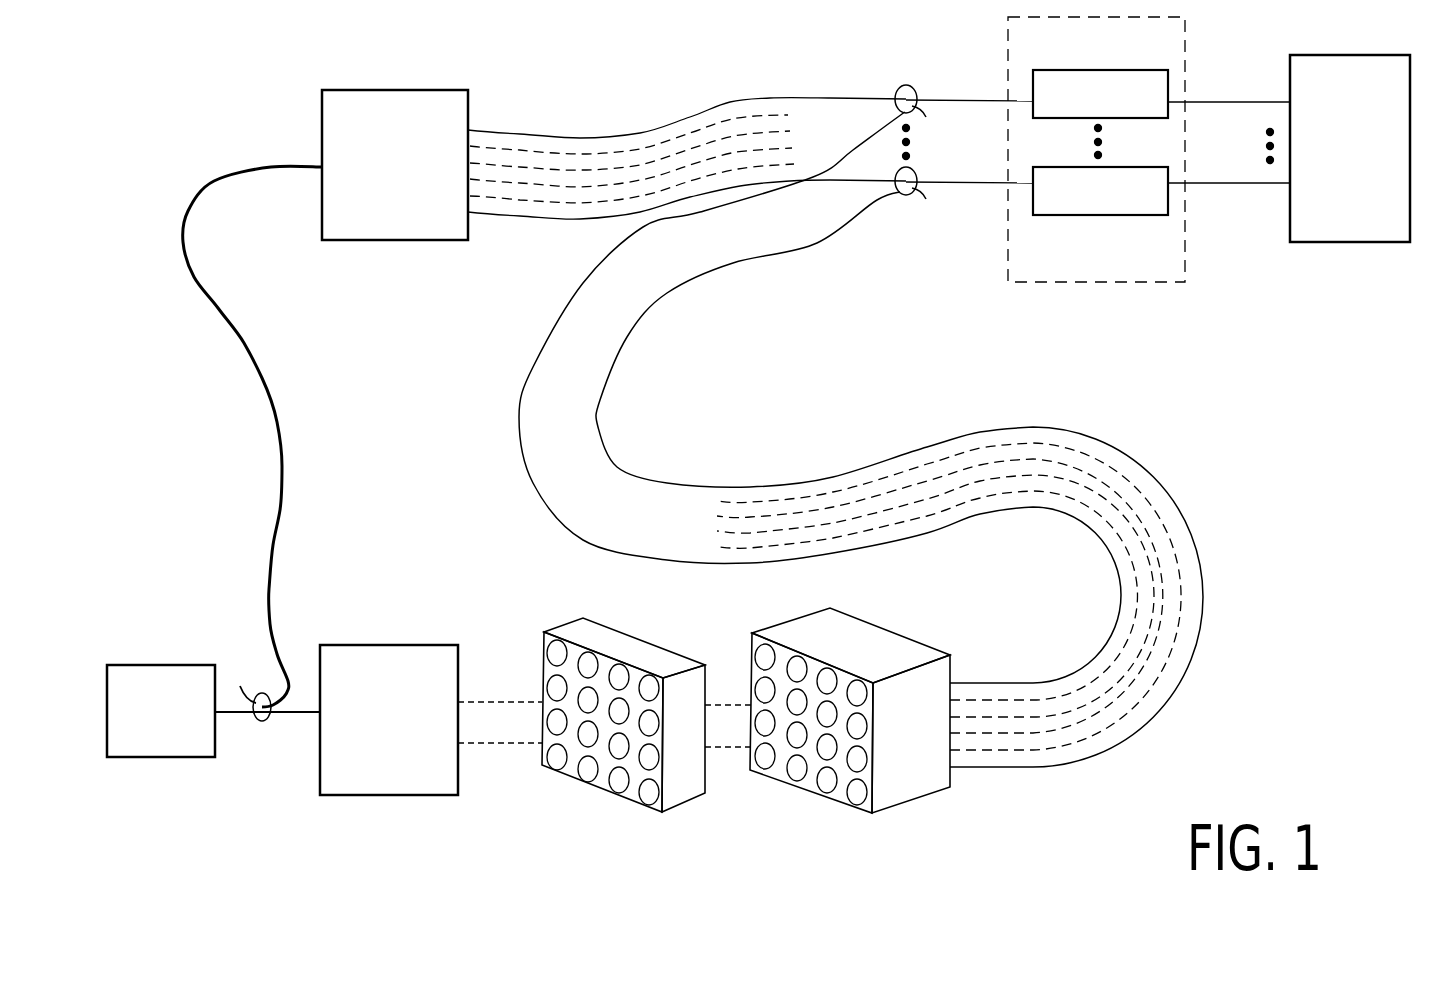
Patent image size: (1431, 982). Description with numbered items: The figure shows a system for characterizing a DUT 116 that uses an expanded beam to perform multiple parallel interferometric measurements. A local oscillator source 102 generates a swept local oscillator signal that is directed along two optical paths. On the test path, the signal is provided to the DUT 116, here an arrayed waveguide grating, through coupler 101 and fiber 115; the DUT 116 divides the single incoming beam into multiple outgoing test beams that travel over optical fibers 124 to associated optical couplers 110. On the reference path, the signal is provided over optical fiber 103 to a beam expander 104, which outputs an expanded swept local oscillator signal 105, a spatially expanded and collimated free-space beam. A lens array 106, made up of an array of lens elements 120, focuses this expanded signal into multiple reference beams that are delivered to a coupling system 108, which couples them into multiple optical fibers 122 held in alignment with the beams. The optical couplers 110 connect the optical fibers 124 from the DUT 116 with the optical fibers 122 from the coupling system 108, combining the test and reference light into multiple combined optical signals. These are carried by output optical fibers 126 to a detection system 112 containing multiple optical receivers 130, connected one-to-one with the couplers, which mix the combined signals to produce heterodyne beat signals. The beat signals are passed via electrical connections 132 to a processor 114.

The coupler 101 is at (262, 690).
The local oscillator source 102 is at (160, 757).
The optical fiber 103 is at (302, 720).
The beam expander 104 is at (370, 645).
The expanded swept local oscillator signal 105 is at (486, 698).
The lens array 106 is at (624, 756).
The coupling system 108 is at (897, 812).
The optical couplers 110 is at (902, 86).
The detection system 112 is at (1133, 282).
The processor 114 is at (1362, 243).
The fiber 115 is at (283, 455).
The DUT 116 is at (392, 240).
The lens elements 120 is at (603, 782).
The optical fibers 122 is at (1202, 572).
The optical fibers 124 is at (692, 98).
The optical fibers 126 is at (963, 99).
The optical receivers 130 is at (1096, 70).
The electrical connections 132 is at (1222, 103).